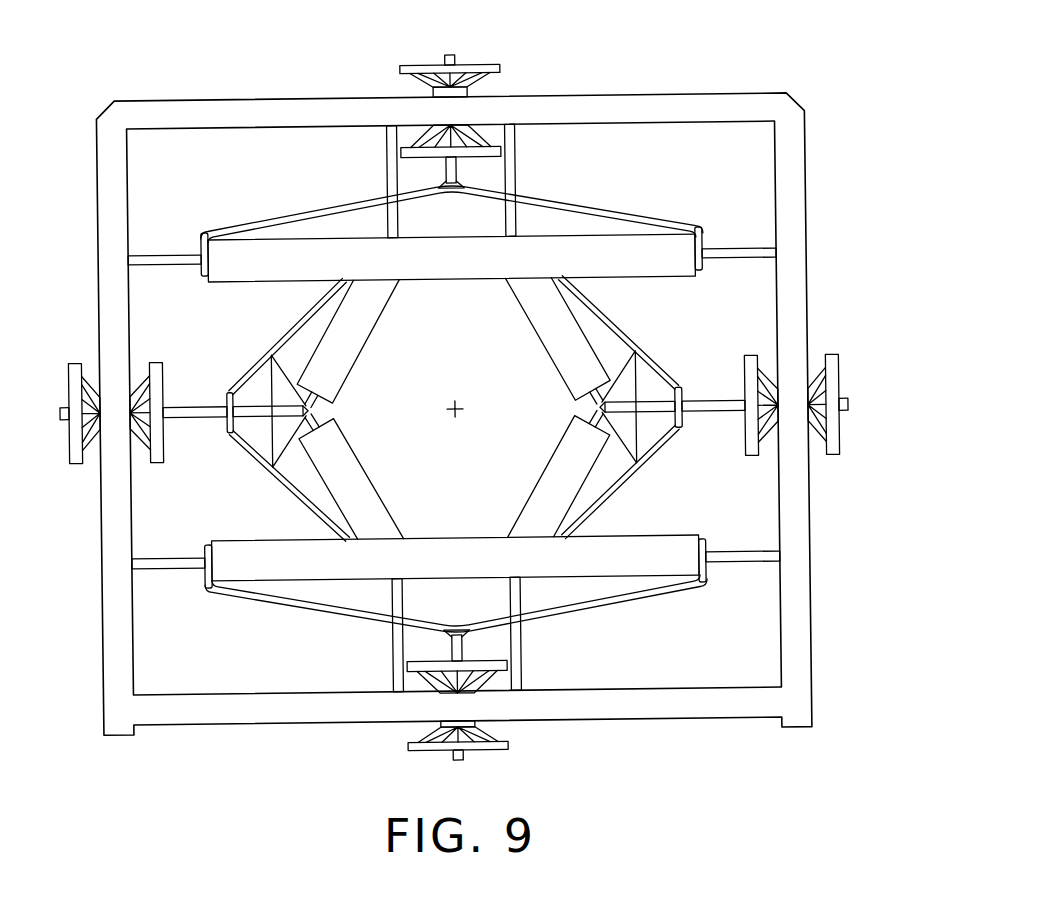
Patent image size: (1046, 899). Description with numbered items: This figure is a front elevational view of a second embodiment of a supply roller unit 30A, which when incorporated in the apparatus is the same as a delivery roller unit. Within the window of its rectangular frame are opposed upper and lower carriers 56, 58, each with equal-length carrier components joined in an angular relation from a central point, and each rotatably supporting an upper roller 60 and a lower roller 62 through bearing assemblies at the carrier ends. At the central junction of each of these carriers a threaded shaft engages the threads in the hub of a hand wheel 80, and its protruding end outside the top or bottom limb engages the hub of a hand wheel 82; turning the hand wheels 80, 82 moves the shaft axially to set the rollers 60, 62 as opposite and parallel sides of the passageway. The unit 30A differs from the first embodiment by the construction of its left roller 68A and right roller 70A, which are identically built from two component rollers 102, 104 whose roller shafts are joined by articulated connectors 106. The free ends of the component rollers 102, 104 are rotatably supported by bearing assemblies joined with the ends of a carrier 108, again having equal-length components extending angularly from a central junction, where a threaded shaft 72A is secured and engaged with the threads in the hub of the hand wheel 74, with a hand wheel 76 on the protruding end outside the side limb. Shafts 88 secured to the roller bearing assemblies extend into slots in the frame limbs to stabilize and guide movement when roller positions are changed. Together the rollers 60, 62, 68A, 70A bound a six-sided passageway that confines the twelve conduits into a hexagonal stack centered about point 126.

The supply roller unit 30A is at (682, 96).
The upper carrier 56 is at (583, 207).
The lower carrier 58 is at (617, 604).
The upper roller 60 is at (451, 258).
The lower roller 62 is at (455, 558).
The left roller 68A is at (348, 377).
The right roller 70A is at (564, 438).
The threaded shaft 72A is at (178, 406).
The hand wheel 74 is at (156, 360).
The hand wheel 76 is at (79, 458).
The hand wheel 80 is at (518, 184).
The hand wheel 82 is at (497, 66).
The shaft 88 is at (150, 258).
The component roller 102 is at (373, 304).
The component roller 104 is at (539, 511).
The articulated connector 106 is at (634, 348).
The carrier 108 is at (609, 313).
The center point 126 is at (458, 418).